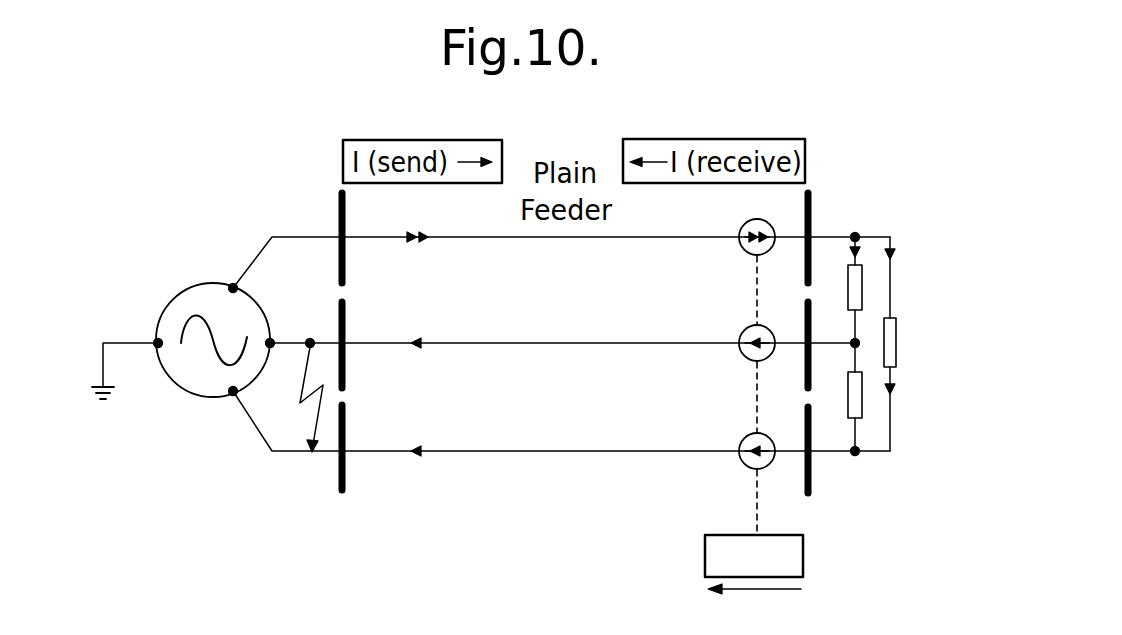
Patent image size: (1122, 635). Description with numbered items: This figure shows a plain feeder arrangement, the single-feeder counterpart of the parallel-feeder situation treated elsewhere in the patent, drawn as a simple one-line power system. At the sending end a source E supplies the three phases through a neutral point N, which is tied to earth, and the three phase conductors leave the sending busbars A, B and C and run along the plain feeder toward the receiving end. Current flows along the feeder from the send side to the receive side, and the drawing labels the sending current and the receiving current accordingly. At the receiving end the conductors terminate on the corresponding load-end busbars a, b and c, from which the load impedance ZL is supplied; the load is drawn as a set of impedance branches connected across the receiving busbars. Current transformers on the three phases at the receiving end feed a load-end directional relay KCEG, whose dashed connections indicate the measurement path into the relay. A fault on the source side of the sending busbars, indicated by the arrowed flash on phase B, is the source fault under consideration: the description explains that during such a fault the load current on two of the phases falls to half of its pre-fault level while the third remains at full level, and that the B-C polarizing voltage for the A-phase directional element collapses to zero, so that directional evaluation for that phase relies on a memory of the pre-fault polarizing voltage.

The source voltage generator E is at (214, 324).
The neutral / earth point N is at (125, 351).
The A-phase A is at (561, 240).
The B-phase B is at (562, 377).
The C-phase C is at (561, 440).
The phase a receiving busbar a is at (822, 238).
The phase b receiving busbar b is at (822, 345).
The phase c receiving busbar c is at (821, 450).
The KCEG protection relay with current transformers KCEG is at (754, 406).
The load impedance ZL is at (891, 344).